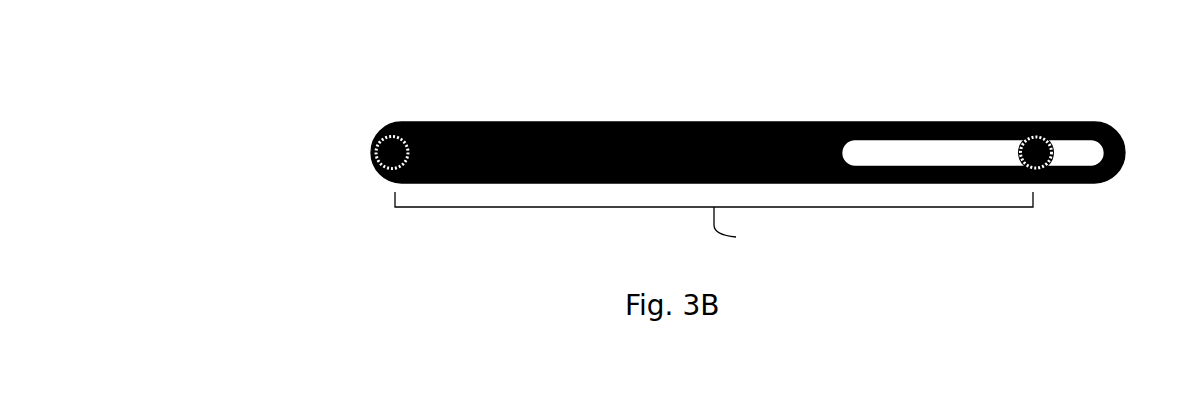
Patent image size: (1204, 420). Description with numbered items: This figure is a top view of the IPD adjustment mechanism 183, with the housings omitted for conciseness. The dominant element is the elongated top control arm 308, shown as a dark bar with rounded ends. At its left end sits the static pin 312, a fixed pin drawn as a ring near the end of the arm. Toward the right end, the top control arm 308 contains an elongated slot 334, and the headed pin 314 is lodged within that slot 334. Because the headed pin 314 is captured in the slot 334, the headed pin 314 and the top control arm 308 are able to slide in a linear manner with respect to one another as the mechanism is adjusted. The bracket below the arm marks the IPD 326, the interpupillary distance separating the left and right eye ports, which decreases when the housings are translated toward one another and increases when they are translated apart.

The IPD adjustment mechanism 183 is at (340, 41).
The top control arm 308 is at (1120, 128).
The static pin 312 is at (376, 140).
The headed pin 314 is at (1018, 150).
The IPD 326 is at (714, 228).
The slot 334 is at (898, 155).